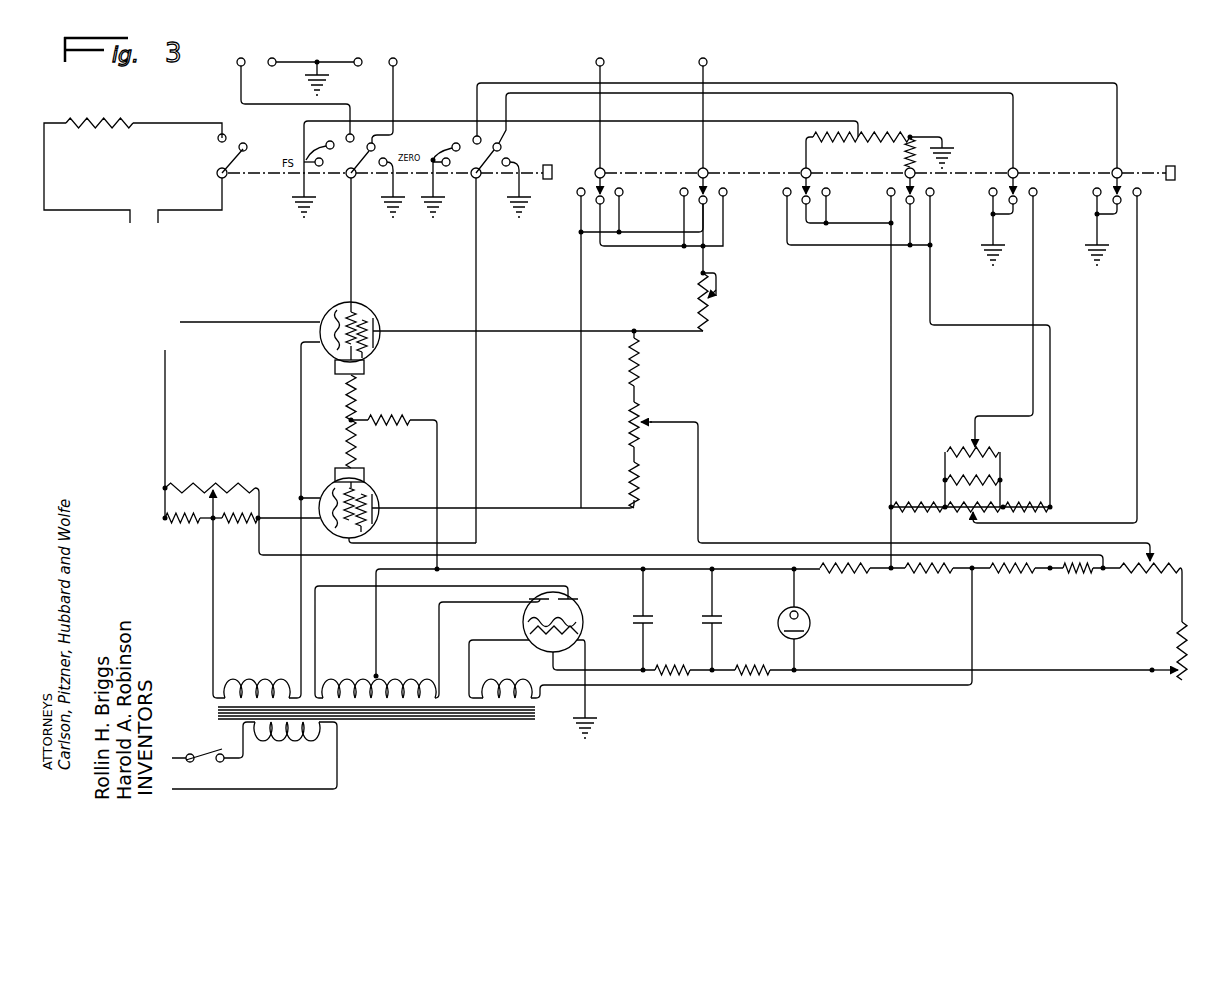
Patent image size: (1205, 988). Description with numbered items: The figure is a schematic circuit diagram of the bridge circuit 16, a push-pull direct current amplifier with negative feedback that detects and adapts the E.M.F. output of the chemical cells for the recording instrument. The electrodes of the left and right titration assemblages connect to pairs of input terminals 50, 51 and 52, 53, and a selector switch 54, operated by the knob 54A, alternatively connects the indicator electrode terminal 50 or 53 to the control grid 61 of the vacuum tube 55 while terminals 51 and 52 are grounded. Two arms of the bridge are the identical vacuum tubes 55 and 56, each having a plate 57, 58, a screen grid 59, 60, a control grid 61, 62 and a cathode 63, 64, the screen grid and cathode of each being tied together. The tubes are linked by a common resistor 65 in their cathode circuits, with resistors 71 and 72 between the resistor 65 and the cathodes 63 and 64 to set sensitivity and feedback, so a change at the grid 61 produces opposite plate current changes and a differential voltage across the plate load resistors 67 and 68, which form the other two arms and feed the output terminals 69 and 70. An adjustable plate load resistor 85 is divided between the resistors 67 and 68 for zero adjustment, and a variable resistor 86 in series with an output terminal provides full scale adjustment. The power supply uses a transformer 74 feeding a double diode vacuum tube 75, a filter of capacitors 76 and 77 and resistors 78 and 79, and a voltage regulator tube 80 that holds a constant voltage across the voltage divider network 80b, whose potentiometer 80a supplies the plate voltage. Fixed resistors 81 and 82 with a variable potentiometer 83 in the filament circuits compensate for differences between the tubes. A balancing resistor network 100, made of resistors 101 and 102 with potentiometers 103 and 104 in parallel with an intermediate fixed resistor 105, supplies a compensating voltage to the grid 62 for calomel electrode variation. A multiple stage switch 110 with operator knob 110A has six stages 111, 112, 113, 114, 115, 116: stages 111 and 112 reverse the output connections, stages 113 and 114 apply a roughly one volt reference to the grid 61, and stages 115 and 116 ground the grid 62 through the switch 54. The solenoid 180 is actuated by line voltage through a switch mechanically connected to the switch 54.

The bridge circuit 16 is at (716, 388).
The input terminal 50 is at (246, 51).
The input terminal 51 is at (274, 57).
The input terminal 52 is at (364, 51).
The input terminal 53 is at (400, 51).
The selector switch 54 is at (339, 196).
The knob 54A is at (548, 163).
The vacuum tube 55 is at (297, 485).
The vacuum tube 56 is at (367, 501).
The plate 57 is at (378, 327).
The plate 58 is at (378, 503).
The screen grid 59 is at (367, 349).
The screen grid 60 is at (364, 492).
The control grid 61 is at (353, 310).
The control grid 62 is at (362, 530).
The cathode 63 is at (337, 311).
The cathode 64 is at (335, 530).
The common resistor 65 is at (392, 418).
The plate load resistor 67 is at (640, 371).
The plate load resistor 68 is at (640, 486).
The output terminal 69 is at (709, 61).
The output terminal 70 is at (606, 61).
The resistor 71 is at (348, 396).
The resistor 72 is at (348, 441).
The transformer 74 is at (366, 729).
The double diode vacuum tube 75 is at (582, 606).
The capacitor 76 is at (650, 627).
The capacitor 77 is at (722, 627).
The resistor 78 is at (675, 668).
The resistor 79 is at (762, 667).
The voltage regulator tube 80 is at (814, 625).
The potentiometer 80a is at (1150, 575).
The voltage divider network 80b is at (953, 584).
The fixed resistor 81 is at (200, 525).
The fixed resistor 82 is at (238, 526).
The variable potentiometer 83 is at (226, 487).
The adjustable plate load resistor 85 is at (643, 414).
The variable resistor 86 is at (715, 315).
The balancing resistor network 100 is at (971, 481).
The resistor 101 is at (913, 504).
The resistor 102 is at (1027, 504).
The potentiometer 103 is at (965, 512).
The potentiometer 104 is at (989, 451).
The intermediate fixed resistor 105 is at (987, 479).
The multiple stage switch 110 is at (1135, 164).
The operator knob 110A is at (1174, 166).
The switch stage 111 is at (606, 168).
The switch stage 112 is at (709, 168).
The switch stage 113 is at (810, 168).
The switch stage 114 is at (903, 168).
The switch stage 115 is at (1018, 168).
The switch stage 116 is at (1112, 168).
The solenoid 180 is at (105, 120).